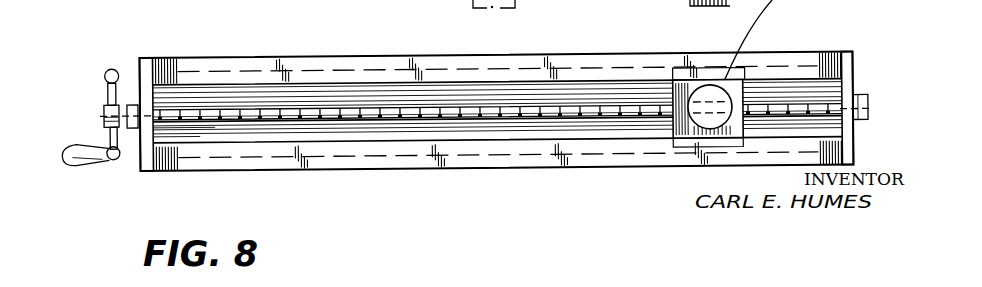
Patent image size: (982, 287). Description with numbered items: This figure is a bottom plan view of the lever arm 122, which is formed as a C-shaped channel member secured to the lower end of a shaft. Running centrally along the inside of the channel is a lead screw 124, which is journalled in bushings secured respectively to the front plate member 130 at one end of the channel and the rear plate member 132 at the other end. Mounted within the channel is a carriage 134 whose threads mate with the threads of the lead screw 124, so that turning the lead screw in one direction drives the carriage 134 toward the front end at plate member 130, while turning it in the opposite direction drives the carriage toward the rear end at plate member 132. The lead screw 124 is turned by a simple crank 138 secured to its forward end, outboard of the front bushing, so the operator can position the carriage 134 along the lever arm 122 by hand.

The lever arm 122 is at (452, 170).
The lead screw 124 is at (370, 124).
The front plate member 130 is at (146, 72).
The rear plate member 132 is at (850, 85).
The carriage 134 is at (677, 123).
The crank 138 is at (103, 113).